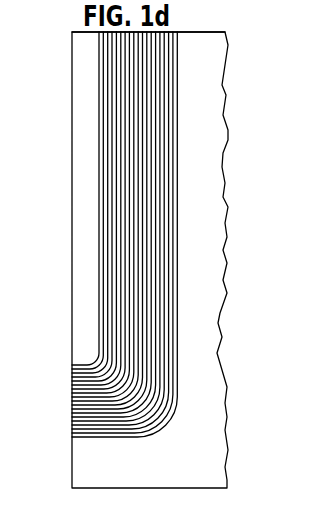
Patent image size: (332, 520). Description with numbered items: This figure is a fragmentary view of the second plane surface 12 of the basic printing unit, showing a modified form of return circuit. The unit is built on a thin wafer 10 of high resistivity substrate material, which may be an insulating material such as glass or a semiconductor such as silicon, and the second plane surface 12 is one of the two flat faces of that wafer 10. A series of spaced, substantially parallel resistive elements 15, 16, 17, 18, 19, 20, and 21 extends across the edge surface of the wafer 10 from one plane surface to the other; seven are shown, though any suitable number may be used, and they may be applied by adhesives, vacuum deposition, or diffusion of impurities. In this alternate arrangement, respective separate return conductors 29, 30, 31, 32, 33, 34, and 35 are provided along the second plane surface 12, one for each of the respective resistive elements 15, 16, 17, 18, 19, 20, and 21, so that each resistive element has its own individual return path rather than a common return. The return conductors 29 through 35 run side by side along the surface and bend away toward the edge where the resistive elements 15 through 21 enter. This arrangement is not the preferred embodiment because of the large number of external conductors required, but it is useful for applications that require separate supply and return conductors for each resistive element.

The wafer 10 is at (230, 138).
The second plane surface 12 is at (197, 82).
The resistive element 15 is at (70, 370).
The resistive element 16 is at (70, 381).
The resistive element 17 is at (70, 390).
The resistive element 18 is at (70, 400).
The resistive element 19 is at (70, 409).
The resistive element 20 is at (70, 423).
The resistive element 21 is at (70, 435).
The return conductor 29 is at (103, 48).
The return conductor 30 is at (113, 65).
The return conductor 31 is at (127, 82).
The return conductor 32 is at (137, 97).
The return conductor 33 is at (152, 117).
The return conductor 34 is at (162, 138).
The return conductor 35 is at (173, 150).